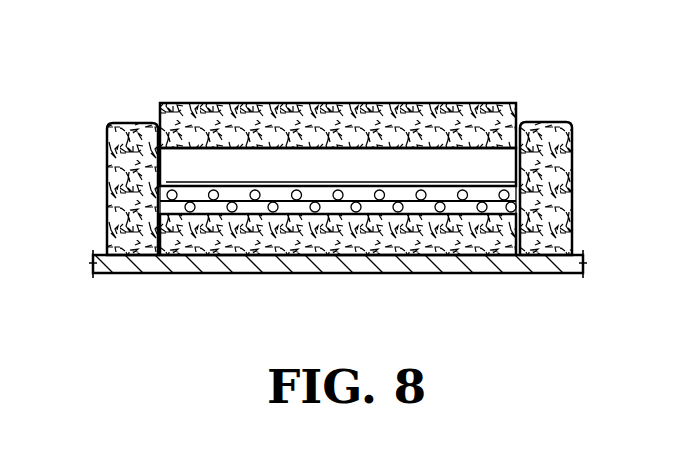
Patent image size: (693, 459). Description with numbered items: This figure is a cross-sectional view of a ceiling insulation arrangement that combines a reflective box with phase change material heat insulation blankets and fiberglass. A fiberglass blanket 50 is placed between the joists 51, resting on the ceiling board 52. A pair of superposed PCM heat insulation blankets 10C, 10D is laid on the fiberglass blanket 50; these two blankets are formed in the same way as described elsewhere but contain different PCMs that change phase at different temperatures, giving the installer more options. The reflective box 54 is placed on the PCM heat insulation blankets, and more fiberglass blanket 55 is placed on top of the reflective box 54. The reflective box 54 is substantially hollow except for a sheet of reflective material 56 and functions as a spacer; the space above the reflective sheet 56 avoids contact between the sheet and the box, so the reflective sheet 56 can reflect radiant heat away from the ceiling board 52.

The fiberglass blanket 50 is at (467, 252).
The joists 51 is at (110, 190).
The ceiling board 52 is at (212, 267).
The reflective box 54 is at (370, 158).
The fiberglass blanket 55 is at (462, 128).
The sheet of reflective material 56 is at (212, 178).
The PCM heat insulation blanket 10C is at (410, 197).
The PCM heat insulation blanket 10D is at (297, 208).